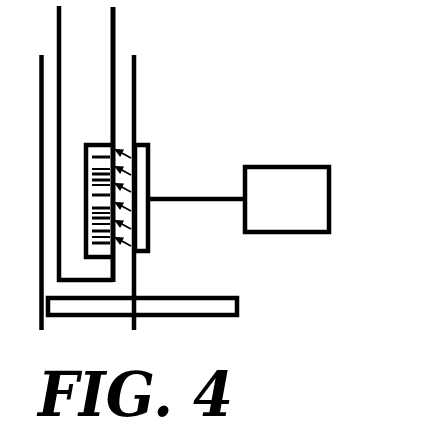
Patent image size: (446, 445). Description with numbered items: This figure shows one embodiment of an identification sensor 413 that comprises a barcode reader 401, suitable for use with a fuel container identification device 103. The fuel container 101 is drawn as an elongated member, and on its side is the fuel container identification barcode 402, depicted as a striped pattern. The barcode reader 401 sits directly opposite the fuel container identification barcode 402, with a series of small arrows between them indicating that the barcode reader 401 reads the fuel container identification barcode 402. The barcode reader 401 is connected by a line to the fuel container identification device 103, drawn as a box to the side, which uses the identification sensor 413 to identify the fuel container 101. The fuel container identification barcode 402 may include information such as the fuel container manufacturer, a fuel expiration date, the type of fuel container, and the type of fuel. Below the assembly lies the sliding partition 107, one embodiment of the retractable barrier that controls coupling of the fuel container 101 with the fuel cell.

The fuel container 101 is at (116, 42).
The fuel container identification barcode 402 is at (87, 143).
The barcode reader 401 is at (150, 171).
The identification sensor 413 is at (233, 130).
The fuel container identification device 103 is at (237, 248).
The sliding partition 107 is at (166, 315).